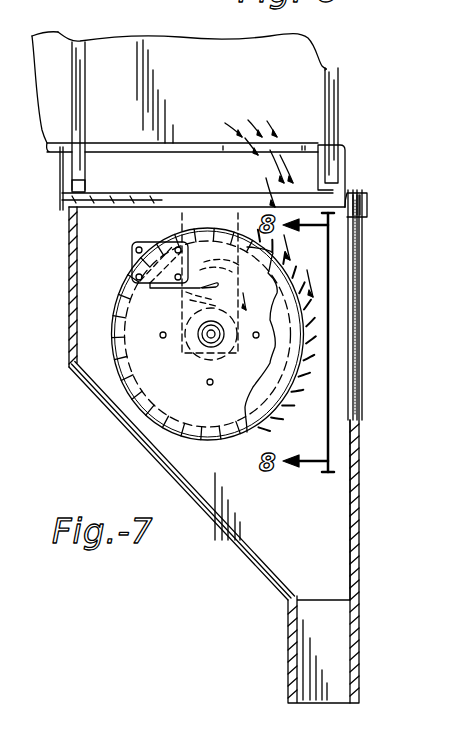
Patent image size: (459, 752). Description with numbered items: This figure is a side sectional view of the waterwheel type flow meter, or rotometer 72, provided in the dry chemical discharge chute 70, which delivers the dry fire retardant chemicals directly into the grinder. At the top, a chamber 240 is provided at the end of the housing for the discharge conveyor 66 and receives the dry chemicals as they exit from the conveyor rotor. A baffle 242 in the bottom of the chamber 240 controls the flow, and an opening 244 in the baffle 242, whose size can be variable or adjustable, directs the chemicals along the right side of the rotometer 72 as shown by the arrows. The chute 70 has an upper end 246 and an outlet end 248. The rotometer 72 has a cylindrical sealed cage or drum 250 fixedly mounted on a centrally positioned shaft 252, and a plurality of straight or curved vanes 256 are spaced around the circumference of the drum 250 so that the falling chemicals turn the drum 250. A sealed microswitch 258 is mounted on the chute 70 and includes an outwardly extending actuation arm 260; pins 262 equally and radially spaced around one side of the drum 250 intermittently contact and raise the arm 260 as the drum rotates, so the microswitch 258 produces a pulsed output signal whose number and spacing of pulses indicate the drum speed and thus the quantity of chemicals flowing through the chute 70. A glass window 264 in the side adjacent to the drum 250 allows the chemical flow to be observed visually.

The discharge conveyor 66 is at (50, 53).
The chute 70 is at (278, 540).
The rotometer 72 is at (152, 317).
The chamber 240 is at (300, 64).
The baffle 242 is at (103, 147).
The opening 244 is at (268, 159).
The upper end 246 is at (342, 210).
The outlet end 248 is at (340, 661).
The drum 250 is at (168, 396).
The shaft 252 is at (212, 340).
The vanes 256 is at (302, 394).
The microswitch 258 is at (150, 242).
The actuation arm 260 is at (195, 280).
The pins 262 is at (256, 340).
The glass window 264 is at (351, 266).